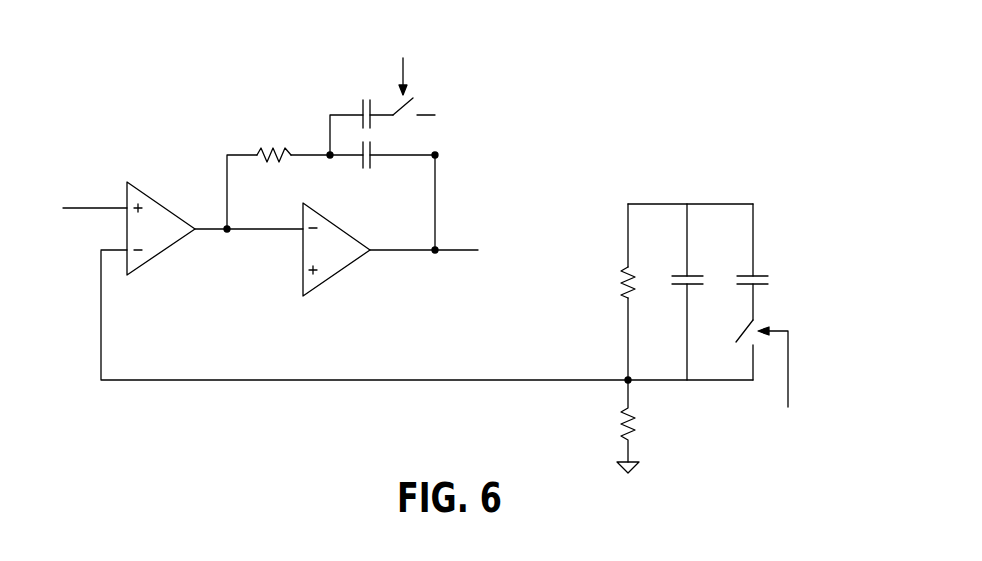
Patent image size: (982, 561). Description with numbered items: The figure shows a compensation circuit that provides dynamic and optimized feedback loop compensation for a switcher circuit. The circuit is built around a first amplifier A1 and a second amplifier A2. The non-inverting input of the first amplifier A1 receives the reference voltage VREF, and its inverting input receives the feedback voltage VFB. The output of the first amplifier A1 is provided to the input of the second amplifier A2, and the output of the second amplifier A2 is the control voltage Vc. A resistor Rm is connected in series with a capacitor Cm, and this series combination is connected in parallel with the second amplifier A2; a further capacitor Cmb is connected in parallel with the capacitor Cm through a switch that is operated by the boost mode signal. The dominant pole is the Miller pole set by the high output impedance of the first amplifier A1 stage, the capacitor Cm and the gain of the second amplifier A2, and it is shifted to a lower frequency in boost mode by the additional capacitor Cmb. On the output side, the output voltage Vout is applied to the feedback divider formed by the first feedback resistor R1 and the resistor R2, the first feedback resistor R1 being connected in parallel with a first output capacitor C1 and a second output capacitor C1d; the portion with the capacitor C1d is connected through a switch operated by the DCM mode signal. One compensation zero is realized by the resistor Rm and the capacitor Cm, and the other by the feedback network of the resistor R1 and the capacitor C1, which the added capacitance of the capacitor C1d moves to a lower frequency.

The first amplifier A1 is at (161, 228).
The second amplifier A2 is at (336, 249).
The resistor Rm is at (273, 139).
The capacitor Cm is at (353, 171).
The capacitor Cmb is at (374, 96).
The first feedback resistor R1 is at (611, 282).
The feedback resistor (lower) R2 is at (613, 426).
The first output capacitor C1 is at (677, 262).
The second output capacitor C1d is at (735, 291).
The reference voltage VREF is at (78, 182).
The feedback voltage VFB is at (68, 246).
The control voltage Vc is at (462, 231).
The output voltage Vout is at (681, 185).